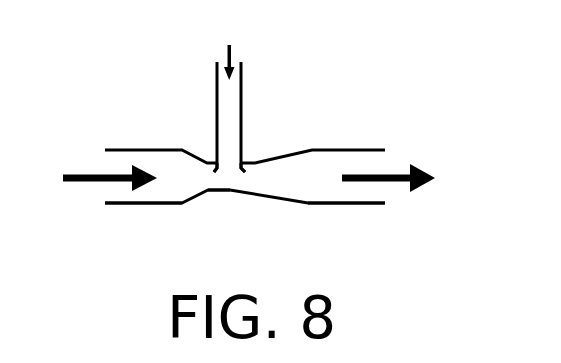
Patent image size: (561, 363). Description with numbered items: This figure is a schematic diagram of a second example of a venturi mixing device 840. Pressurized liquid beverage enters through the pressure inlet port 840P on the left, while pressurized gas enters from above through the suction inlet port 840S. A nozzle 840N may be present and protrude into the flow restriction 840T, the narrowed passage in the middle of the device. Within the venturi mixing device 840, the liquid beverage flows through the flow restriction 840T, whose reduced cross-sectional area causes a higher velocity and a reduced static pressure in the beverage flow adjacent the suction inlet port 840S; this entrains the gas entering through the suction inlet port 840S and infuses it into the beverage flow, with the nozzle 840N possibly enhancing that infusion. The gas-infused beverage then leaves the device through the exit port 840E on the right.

The venturi mixing device 840 is at (183, 76).
The suction inlet port 840S is at (240, 80).
The nozzle 840N is at (240, 171).
The pressure inlet port 840P is at (143, 203).
The flow restriction 840T is at (230, 190).
The exit port 840E is at (335, 203).